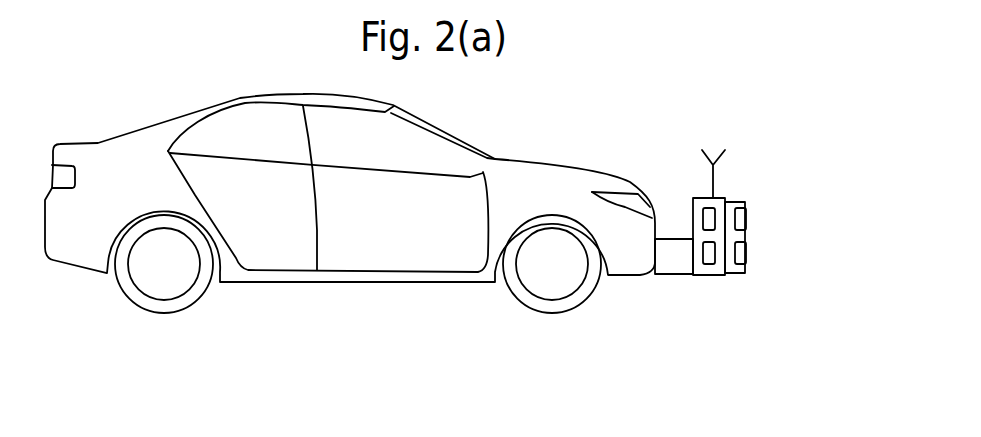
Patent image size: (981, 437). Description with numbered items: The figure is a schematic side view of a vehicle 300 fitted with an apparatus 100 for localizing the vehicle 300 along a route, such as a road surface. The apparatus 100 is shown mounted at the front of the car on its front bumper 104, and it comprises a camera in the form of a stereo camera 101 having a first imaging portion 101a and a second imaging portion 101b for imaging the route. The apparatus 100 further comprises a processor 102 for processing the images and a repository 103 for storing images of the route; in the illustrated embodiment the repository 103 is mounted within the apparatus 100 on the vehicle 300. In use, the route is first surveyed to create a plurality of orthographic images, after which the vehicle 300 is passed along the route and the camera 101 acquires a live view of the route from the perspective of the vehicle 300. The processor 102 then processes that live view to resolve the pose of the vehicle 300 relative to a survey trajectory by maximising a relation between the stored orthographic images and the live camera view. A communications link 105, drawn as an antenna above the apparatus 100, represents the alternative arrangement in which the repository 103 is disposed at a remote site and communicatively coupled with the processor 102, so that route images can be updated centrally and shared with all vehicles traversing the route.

The vehicle 300 is at (202, 117).
The apparatus 100 is at (713, 197).
The stereo camera 101 is at (735, 267).
The first imaging portion 101a is at (742, 218).
The second imaging portion 101b is at (743, 253).
The processor 102 is at (708, 258).
The repository 103 is at (703, 218).
The front bumper 104 is at (675, 262).
The communications link 105 is at (725, 160).